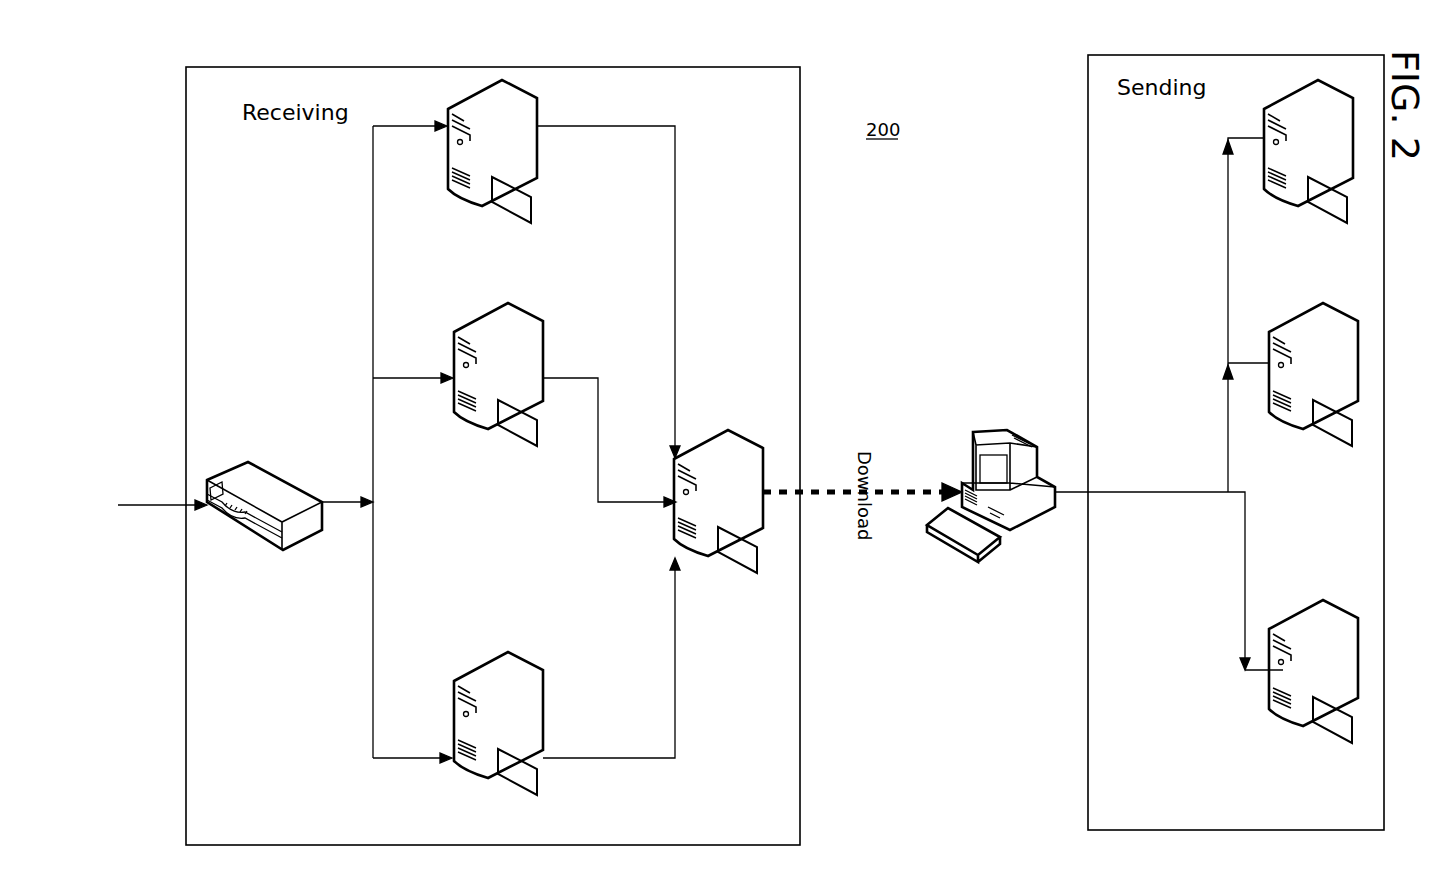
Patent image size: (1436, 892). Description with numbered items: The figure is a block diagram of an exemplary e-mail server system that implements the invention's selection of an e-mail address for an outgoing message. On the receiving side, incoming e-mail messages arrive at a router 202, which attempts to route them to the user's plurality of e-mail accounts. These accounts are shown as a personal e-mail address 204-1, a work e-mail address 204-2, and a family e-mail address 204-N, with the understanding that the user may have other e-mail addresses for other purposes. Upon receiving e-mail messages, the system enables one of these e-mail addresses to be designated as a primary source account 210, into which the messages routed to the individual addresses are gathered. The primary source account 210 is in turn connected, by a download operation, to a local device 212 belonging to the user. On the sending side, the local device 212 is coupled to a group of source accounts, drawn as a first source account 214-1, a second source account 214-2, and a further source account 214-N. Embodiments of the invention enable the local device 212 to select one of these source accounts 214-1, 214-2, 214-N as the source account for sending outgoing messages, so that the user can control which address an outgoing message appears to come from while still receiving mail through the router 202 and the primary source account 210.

The router 202 is at (280, 468).
The personal e-mail address 204-1 is at (536, 130).
The work e-mail address 204-2 is at (543, 325).
The family e-mail address 204-N is at (543, 683).
The primary source account 210 is at (745, 440).
The local device 212 is at (990, 432).
The source account 214-1 is at (1307, 113).
The source account 214-2 is at (1305, 312).
The source account 214-N is at (1300, 612).